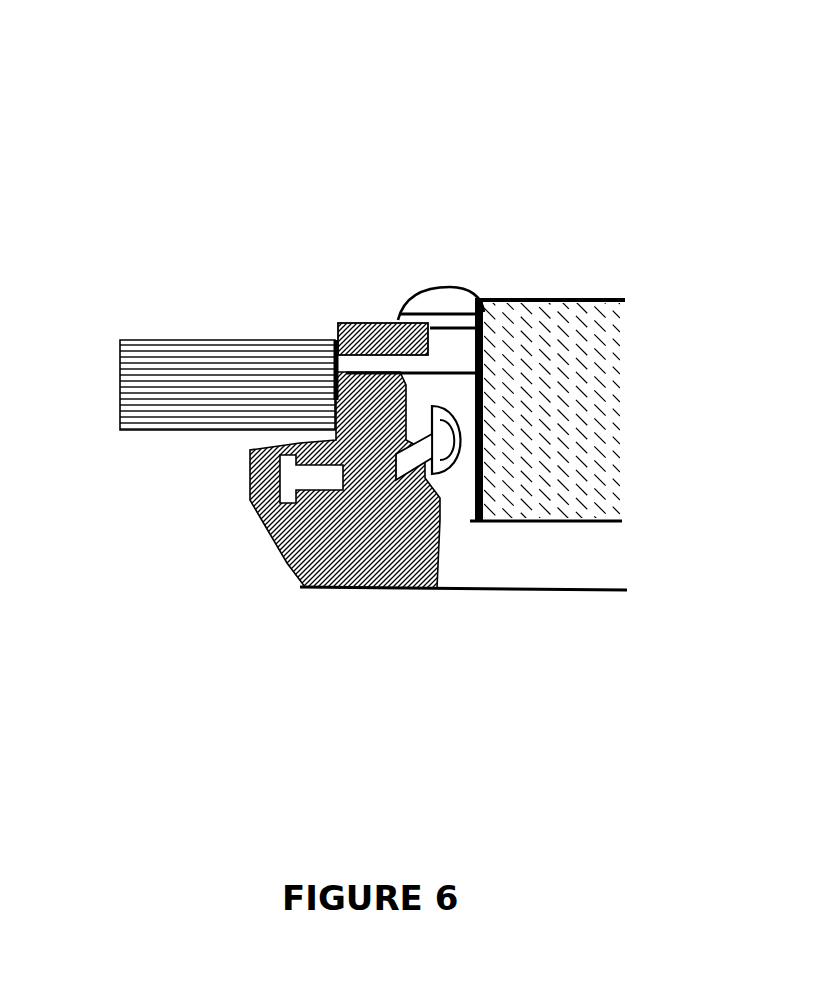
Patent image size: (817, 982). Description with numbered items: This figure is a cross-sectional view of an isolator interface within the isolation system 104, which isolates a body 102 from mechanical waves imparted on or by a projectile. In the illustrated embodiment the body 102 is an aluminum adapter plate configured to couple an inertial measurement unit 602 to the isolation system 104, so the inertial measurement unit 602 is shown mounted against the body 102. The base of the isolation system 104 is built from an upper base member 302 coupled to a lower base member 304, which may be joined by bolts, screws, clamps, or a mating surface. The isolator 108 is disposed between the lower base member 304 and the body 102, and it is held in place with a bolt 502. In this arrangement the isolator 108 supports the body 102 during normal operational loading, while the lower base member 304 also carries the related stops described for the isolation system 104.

The isolation system 104 is at (230, 187).
The upper base member 302 is at (368, 340).
The lower base member 304 is at (165, 362).
The inertial measurement unit 602 is at (607, 345).
The isolator 108 is at (358, 413).
The bolt 502 is at (430, 445).
The body 102 is at (583, 562).